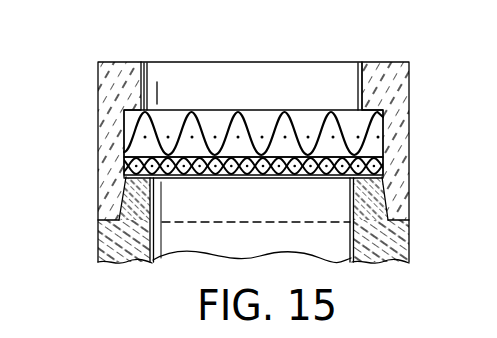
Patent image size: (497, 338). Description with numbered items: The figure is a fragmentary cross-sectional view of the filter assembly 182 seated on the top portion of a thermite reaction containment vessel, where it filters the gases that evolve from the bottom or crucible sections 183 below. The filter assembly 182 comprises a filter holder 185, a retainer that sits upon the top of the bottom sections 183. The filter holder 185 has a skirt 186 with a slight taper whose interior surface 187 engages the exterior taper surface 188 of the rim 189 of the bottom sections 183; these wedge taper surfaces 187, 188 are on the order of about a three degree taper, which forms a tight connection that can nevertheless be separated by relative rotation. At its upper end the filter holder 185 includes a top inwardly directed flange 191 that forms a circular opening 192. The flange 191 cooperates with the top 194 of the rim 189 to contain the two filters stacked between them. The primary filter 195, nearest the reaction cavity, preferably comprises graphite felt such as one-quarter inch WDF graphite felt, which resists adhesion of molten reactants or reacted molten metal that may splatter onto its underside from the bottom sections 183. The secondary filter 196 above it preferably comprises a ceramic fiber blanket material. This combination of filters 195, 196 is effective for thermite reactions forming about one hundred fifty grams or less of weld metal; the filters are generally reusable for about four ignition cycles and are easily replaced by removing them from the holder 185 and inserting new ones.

The filter assembly 182 is at (455, 82).
The bottom or crucible sections 183 is at (411, 233).
The filter holder 185 is at (411, 131).
The skirt 186 is at (98, 202).
The interior surface 187 is at (124, 194).
The exterior taper surface 188 is at (383, 196).
The rim 189 is at (368, 193).
The top inwardly directed flange 191 is at (142, 83).
The circular opening 192 is at (330, 74).
The top of rim 194 is at (170, 181).
The primary filter 195 is at (125, 172).
The secondary filter 196 is at (142, 128).